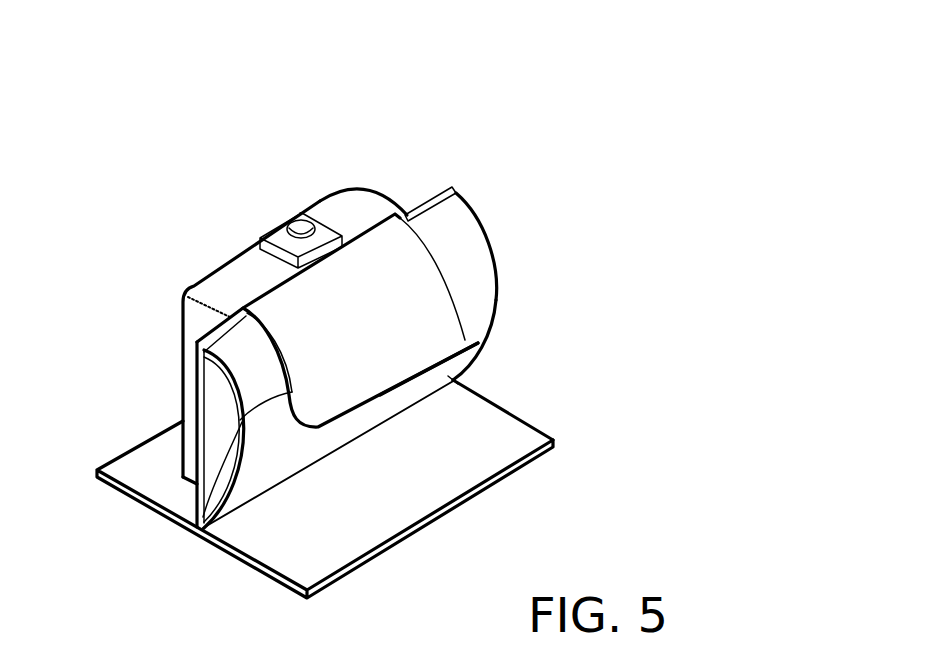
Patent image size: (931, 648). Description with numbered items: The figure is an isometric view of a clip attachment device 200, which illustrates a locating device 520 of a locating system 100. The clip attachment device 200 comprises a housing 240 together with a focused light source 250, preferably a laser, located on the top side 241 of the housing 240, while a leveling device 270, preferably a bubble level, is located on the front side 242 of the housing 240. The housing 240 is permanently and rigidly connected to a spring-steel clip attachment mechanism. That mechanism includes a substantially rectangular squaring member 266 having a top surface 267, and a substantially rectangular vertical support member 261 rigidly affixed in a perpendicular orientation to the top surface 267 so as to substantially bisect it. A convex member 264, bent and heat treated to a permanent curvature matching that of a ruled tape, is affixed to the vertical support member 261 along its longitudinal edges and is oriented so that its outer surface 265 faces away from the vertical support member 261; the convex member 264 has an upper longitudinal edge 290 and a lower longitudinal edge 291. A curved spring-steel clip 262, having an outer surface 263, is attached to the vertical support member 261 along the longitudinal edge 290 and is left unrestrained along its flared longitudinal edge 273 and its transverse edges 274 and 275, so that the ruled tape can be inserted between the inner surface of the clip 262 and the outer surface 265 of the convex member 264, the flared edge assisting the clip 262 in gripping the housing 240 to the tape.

The locating system 100 is at (134, 74).
The clip attachment device 200 is at (159, 140).
The locating device 520 is at (245, 97).
The housing 240 is at (228, 262).
The top side 241 is at (244, 240).
The front side 242 is at (182, 365).
The focused light source 250 is at (297, 208).
The leveling device 270 is at (157, 302).
The vertical support member 261 is at (168, 431).
The transverse edge 274 is at (193, 505).
The flared longitudinal edge 273 is at (300, 427).
The upper longitudinal edge 290 is at (455, 190).
The convex member 264 is at (481, 220).
The transverse edge 275 is at (443, 272).
The outer surface 265 is at (497, 298).
The outer surface 263 is at (438, 340).
The lower longitudinal edge 291 is at (455, 380).
The clip 262 is at (425, 397).
The squaring member 266 is at (436, 520).
The top surface 267 is at (358, 548).